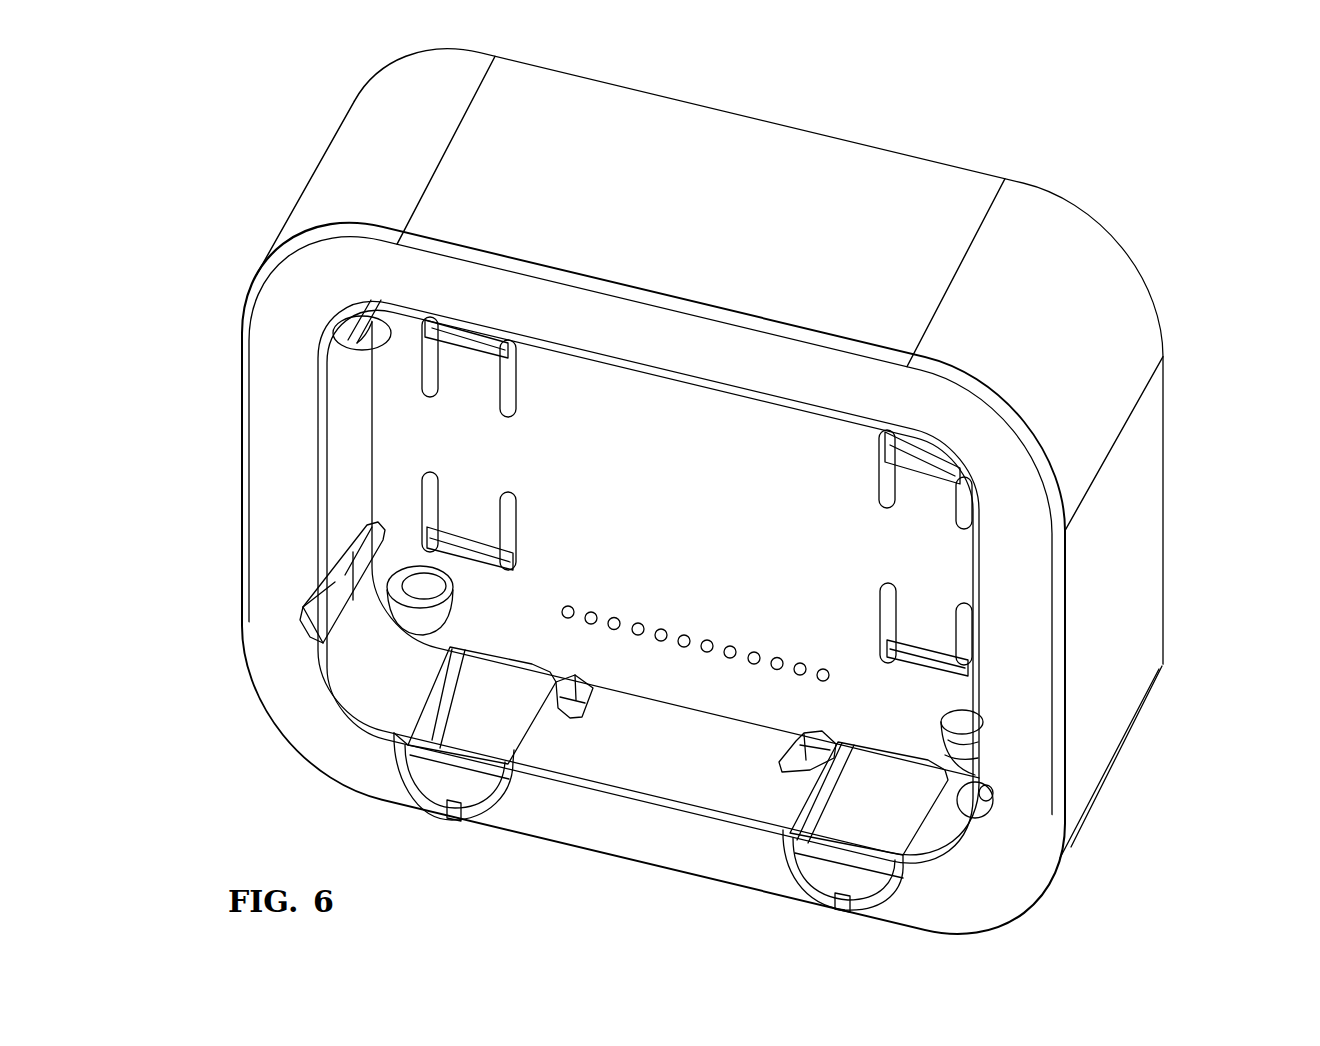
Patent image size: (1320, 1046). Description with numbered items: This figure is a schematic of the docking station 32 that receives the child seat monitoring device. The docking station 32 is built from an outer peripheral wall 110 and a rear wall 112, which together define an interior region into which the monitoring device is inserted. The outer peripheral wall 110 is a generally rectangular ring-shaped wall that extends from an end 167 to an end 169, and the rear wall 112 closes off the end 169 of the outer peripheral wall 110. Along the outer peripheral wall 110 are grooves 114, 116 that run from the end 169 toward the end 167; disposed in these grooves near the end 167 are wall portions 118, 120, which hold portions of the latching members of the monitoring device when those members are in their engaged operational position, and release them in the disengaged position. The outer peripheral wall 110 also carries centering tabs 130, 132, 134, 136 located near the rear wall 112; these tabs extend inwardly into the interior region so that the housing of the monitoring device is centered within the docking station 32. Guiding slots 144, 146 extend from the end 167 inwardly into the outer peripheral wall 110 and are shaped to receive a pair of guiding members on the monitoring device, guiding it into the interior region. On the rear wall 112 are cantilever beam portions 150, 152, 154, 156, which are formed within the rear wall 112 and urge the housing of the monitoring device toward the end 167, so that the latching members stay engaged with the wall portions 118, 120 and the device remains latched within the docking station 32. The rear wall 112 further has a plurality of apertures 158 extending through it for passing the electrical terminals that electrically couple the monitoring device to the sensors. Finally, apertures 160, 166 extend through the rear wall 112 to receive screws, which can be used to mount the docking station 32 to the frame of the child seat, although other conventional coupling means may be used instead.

The docking station 32 is at (1188, 262).
The outer peripheral wall 110 is at (937, 180).
The rear wall 112 is at (700, 503).
The groove 114 is at (482, 704).
The groove 116 is at (872, 828).
The wall portion 118 is at (447, 781).
The wall portion 120 is at (857, 880).
The centering tab 130 is at (797, 767).
The centering tab 132 is at (472, 800).
The centering tab 134 is at (350, 573).
The centering tab 136 is at (330, 345).
The guiding slot 144 is at (330, 577).
The guiding slot 146 is at (968, 815).
The cantilever beam portion 150 is at (425, 352).
The cantilever beam portion 152 is at (398, 575).
The cantilever beam portion 154 is at (920, 463).
The cantilever beam portion 156 is at (918, 643).
The apertures 158 is at (775, 657).
The aperture 160 is at (420, 628).
The aperture 166 is at (985, 772).
The end 167 is at (934, 933).
The end 169 is at (1163, 663).